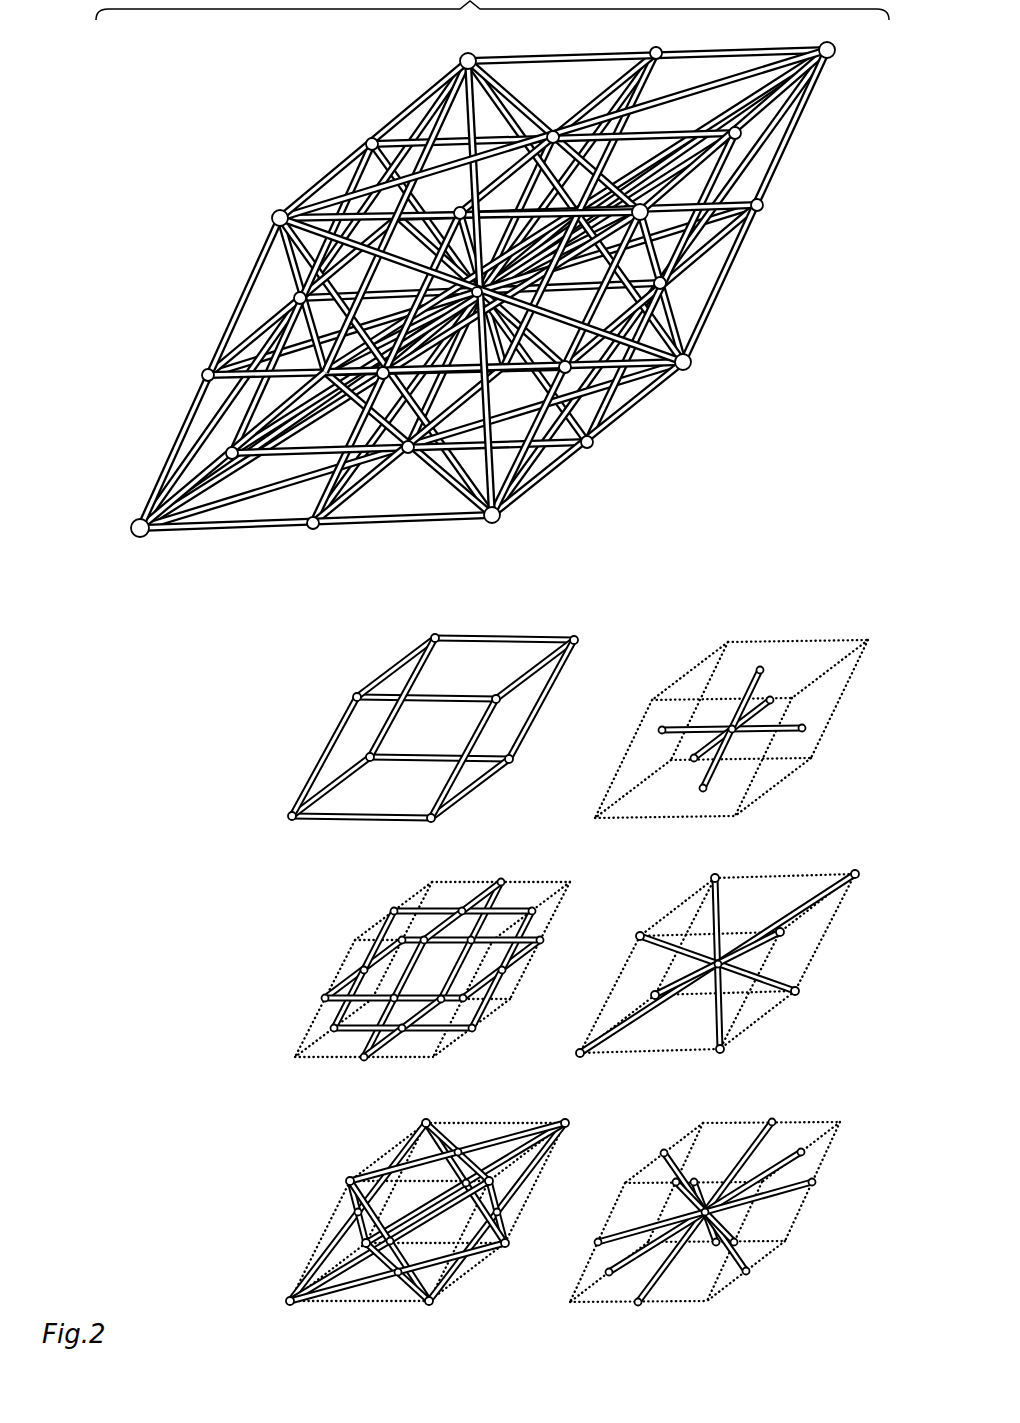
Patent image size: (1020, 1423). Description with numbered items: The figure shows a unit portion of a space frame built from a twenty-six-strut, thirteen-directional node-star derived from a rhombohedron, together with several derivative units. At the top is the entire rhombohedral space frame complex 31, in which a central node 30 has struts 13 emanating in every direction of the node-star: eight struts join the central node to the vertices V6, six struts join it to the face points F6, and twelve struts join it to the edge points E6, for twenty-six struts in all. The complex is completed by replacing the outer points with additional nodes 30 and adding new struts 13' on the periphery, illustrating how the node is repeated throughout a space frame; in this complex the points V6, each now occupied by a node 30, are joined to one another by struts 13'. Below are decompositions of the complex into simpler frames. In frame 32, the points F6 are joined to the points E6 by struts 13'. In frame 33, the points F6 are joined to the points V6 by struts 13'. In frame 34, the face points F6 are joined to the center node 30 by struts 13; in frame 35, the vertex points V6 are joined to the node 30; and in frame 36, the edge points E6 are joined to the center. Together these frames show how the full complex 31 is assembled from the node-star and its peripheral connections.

The struts 13 is at (565, 604).
The struts 13' is at (553, 693).
The node 30 is at (830, 62).
The rhombohedral space frame complex 31 is at (98, 545).
The frame 32 is at (298, 845).
The frame 33 is at (305, 1240).
The frame 34 is at (585, 805).
The frame 35 is at (588, 1038).
The frame 36 is at (560, 1270).
The vertices V6 is at (458, 57).
The edge points E6 is at (766, 205).
The face points F6 is at (409, 456).